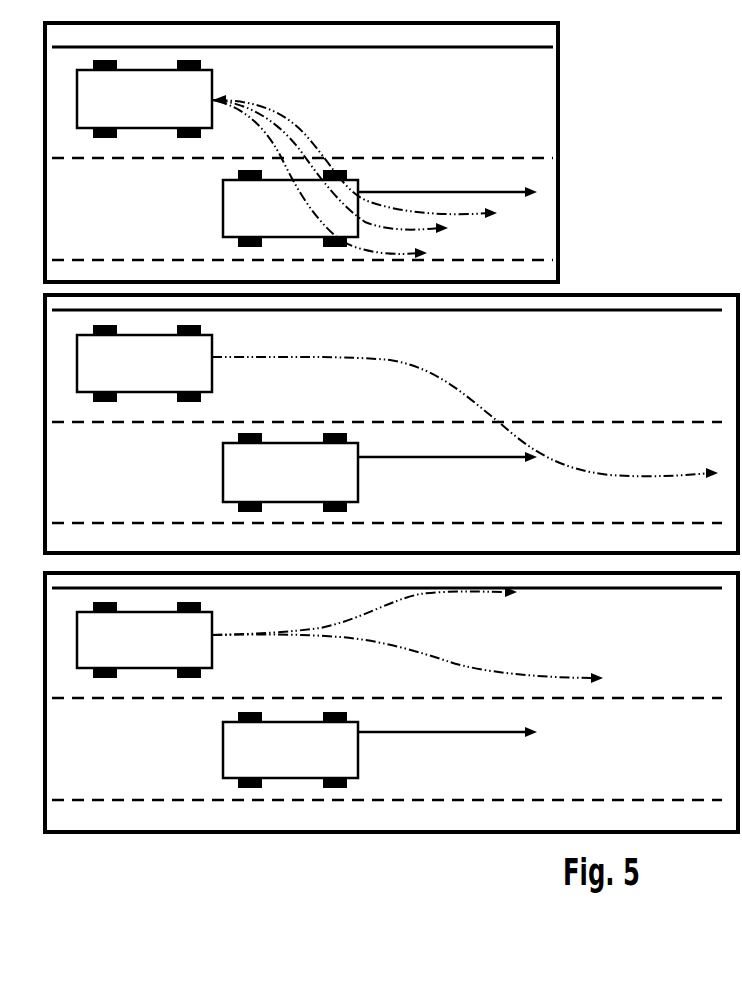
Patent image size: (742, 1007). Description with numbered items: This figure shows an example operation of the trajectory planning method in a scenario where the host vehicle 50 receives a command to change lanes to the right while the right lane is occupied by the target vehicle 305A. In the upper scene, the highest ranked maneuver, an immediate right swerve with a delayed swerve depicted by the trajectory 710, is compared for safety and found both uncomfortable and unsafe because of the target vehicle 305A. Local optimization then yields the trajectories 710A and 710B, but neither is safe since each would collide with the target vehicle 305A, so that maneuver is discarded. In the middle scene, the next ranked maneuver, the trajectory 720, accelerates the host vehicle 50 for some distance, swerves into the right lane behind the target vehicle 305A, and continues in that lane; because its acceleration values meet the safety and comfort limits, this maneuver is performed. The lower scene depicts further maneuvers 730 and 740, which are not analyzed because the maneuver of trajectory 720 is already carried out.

The host vehicle 50 is at (150, 113).
The target vehicle 305A is at (311, 216).
The trajectory 710 is at (287, 126).
The trajectory 710A is at (287, 133).
The trajectory 710B is at (277, 148).
The trajectory 720 is at (443, 377).
The maneuver 730 is at (393, 643).
The maneuver 740 is at (408, 598).